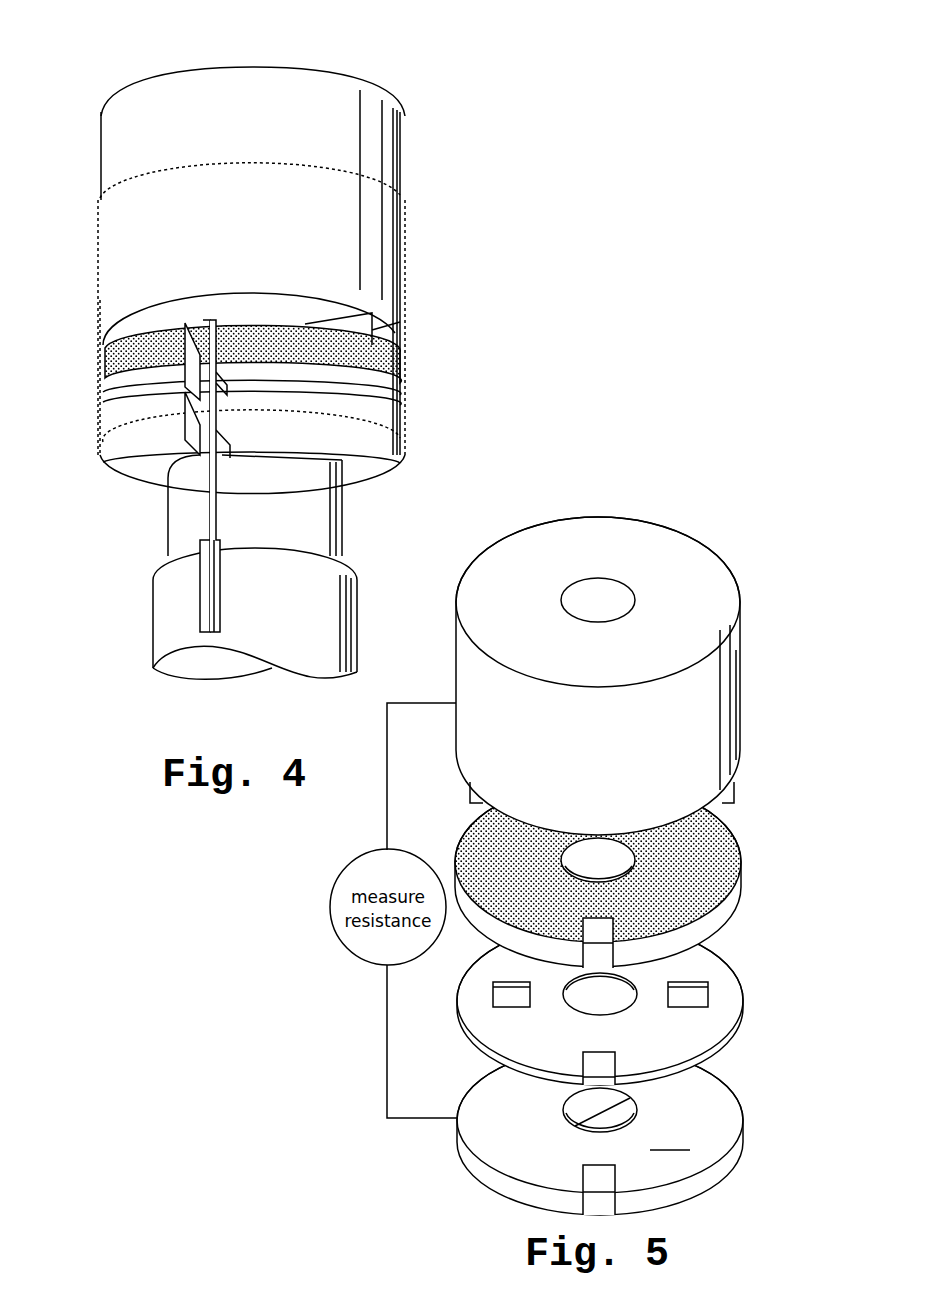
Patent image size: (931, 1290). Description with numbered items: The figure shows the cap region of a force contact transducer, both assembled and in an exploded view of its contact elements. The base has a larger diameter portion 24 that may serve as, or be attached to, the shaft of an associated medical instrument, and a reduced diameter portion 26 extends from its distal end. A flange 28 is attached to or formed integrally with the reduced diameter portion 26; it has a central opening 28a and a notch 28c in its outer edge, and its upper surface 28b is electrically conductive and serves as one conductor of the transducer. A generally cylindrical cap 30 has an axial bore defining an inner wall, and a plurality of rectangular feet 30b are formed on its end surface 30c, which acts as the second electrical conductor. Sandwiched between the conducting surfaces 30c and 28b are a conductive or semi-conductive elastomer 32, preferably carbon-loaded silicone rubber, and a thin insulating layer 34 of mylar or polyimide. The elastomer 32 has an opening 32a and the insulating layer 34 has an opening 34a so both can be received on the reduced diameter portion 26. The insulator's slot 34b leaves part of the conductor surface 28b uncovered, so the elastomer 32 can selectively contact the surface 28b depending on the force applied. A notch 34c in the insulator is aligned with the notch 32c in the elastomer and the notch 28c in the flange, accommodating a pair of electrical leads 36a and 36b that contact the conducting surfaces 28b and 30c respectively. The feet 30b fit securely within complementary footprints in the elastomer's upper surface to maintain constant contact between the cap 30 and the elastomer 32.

In FIG. 4, the larger diameter portion 24 is at (357, 622).
In FIG. 4, the reduced diameter portion 26 is at (342, 525).
In FIG. 4, the flange 28 is at (385, 480).
In FIG. 5, the flange 28 is at (744, 1128).
In FIG. 5, the central opening 28a is at (608, 1085).
In FIG. 5, the upper surface 28b is at (670, 1140).
In FIG. 4, the notch 28c is at (203, 458).
In FIG. 5, the notch 28c is at (603, 1203).
In FIG. 4, the cap 30 is at (403, 160).
In FIG. 5, the cap 30 is at (705, 692).
In FIG. 4, the rectangular feet 30b is at (372, 330).
In FIG. 5, the rectangular feet 30b is at (728, 803).
In FIG. 4, the end surface 30c is at (103, 350).
In FIG. 4, the conductive elastomer 32 is at (400, 380).
In FIG. 5, the conductive elastomer 32 is at (740, 892).
In FIG. 5, the opening 32a is at (603, 866).
In FIG. 5, the notch 32c is at (600, 958).
In FIG. 4, the insulating layer 34 is at (400, 403).
In FIG. 5, the insulating layer 34 is at (722, 1024).
In FIG. 5, the opening 34a is at (603, 1000).
In FIG. 5, the slot 34b is at (693, 998).
In FIG. 4, the notch 34c is at (200, 322).
In FIG. 5, the notch 34c is at (600, 1076).
In FIG. 4, the electrical lead 36a is at (205, 633).
In FIG. 4, the electrical lead 36b is at (214, 633).